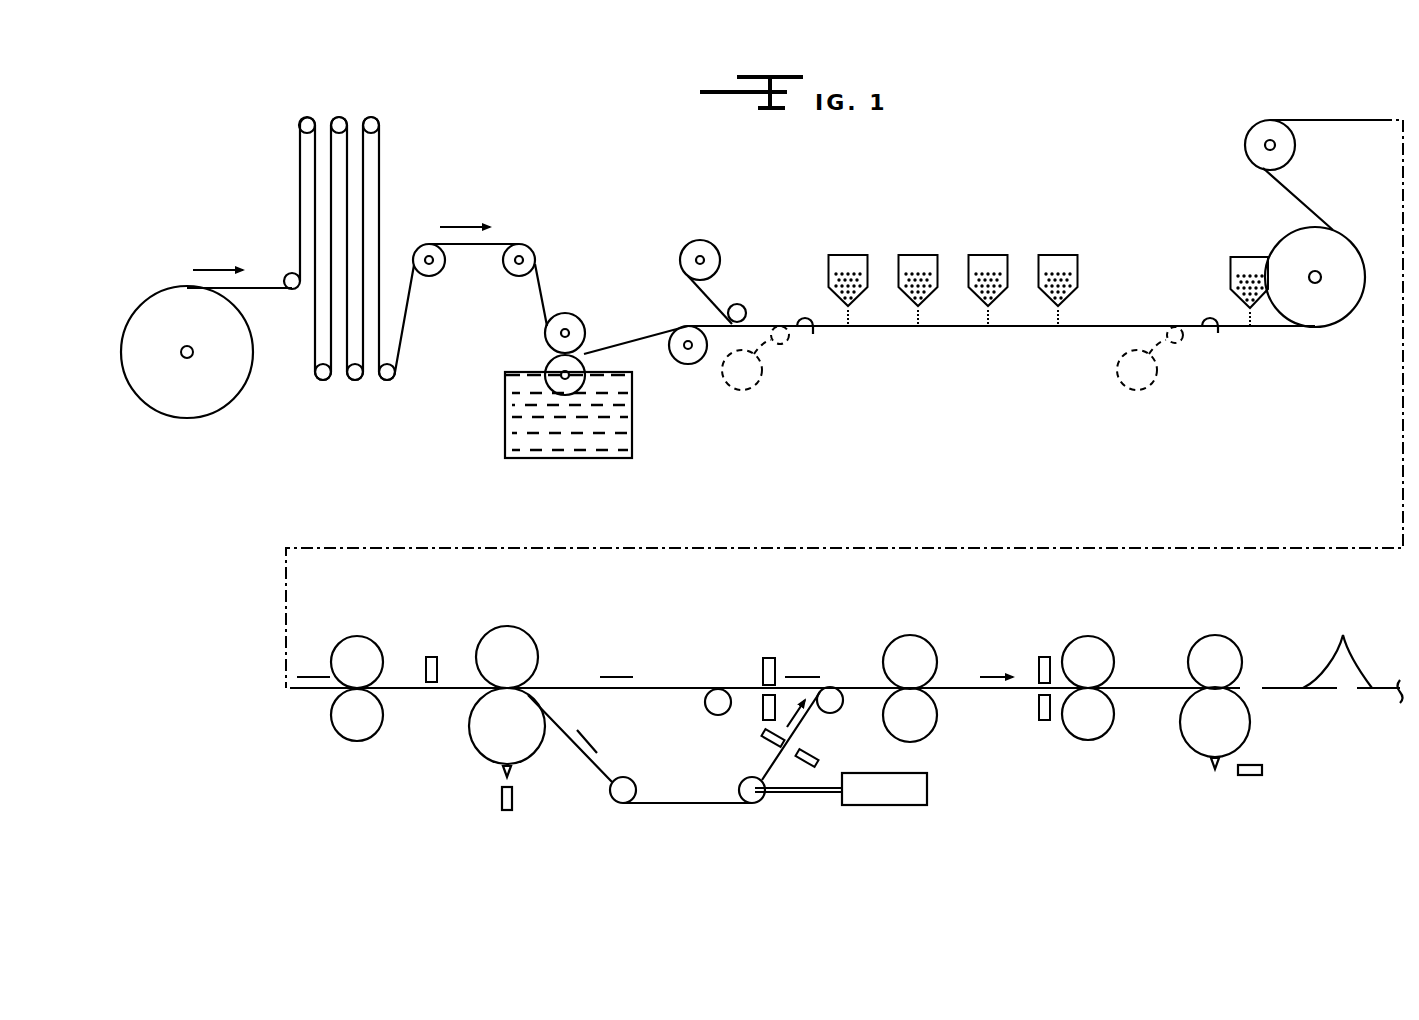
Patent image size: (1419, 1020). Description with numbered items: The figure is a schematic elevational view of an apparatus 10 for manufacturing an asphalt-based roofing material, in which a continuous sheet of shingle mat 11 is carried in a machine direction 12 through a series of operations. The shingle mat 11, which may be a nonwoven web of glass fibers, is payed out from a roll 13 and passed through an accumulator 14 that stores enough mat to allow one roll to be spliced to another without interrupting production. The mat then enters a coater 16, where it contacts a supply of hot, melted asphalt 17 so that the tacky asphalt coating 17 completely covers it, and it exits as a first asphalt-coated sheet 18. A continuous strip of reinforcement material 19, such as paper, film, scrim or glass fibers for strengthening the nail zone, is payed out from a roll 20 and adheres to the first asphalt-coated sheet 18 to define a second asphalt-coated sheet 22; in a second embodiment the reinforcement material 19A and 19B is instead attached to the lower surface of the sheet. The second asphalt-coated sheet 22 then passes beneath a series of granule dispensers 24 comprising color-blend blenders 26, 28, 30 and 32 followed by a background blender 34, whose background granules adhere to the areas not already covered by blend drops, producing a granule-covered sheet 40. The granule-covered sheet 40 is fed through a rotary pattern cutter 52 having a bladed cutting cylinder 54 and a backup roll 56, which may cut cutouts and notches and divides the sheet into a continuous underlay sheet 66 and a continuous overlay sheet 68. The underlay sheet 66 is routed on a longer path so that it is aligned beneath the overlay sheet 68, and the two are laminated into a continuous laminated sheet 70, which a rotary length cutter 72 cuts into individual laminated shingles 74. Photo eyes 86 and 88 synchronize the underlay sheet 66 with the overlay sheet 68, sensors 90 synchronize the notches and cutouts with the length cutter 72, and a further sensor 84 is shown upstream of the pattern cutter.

The apparatus 10 is at (230, 152).
The shingle mat 11 is at (262, 292).
The machine direction 12 is at (210, 266).
The roll 13 is at (175, 392).
The accumulator 14 is at (405, 150).
The coater 16 is at (505, 380).
The asphalt coating 17 is at (617, 413).
The first asphalt-coated sheet 18 is at (627, 330).
The reinforcement material 19 is at (712, 297).
The reinforcement material 19A is at (766, 352).
The reinforcement material 19B is at (1160, 352).
The roll 20 is at (690, 243).
The second asphalt-coated sheet 22 is at (811, 340).
The granule dispensers 24 is at (907, 185).
The initial granule blender 26 is at (828, 263).
The color-blend blender 28 is at (898, 263).
The color-blend blender 30 is at (968, 263).
The color-blend blender 32 is at (1038, 263).
The background blender 34 is at (1230, 266).
The granule-covered sheet 40 is at (1218, 333).
The rotary pattern cutter 52 is at (478, 628).
The bladed cutting cylinder 54 is at (467, 728).
The backup roll 56 is at (527, 628).
The continuous underlay sheet 66 is at (693, 803).
The continuous overlay sheet 68 is at (657, 688).
The continuous laminated sheet 70 is at (860, 688).
The rotary length cutter 72 is at (1185, 733).
The laminated shingles 74 is at (1337, 646).
The sensor 84 is at (431, 655).
The photo eye 86 is at (770, 657).
The photo eye 88 is at (810, 750).
The sensors 90 is at (1040, 658).